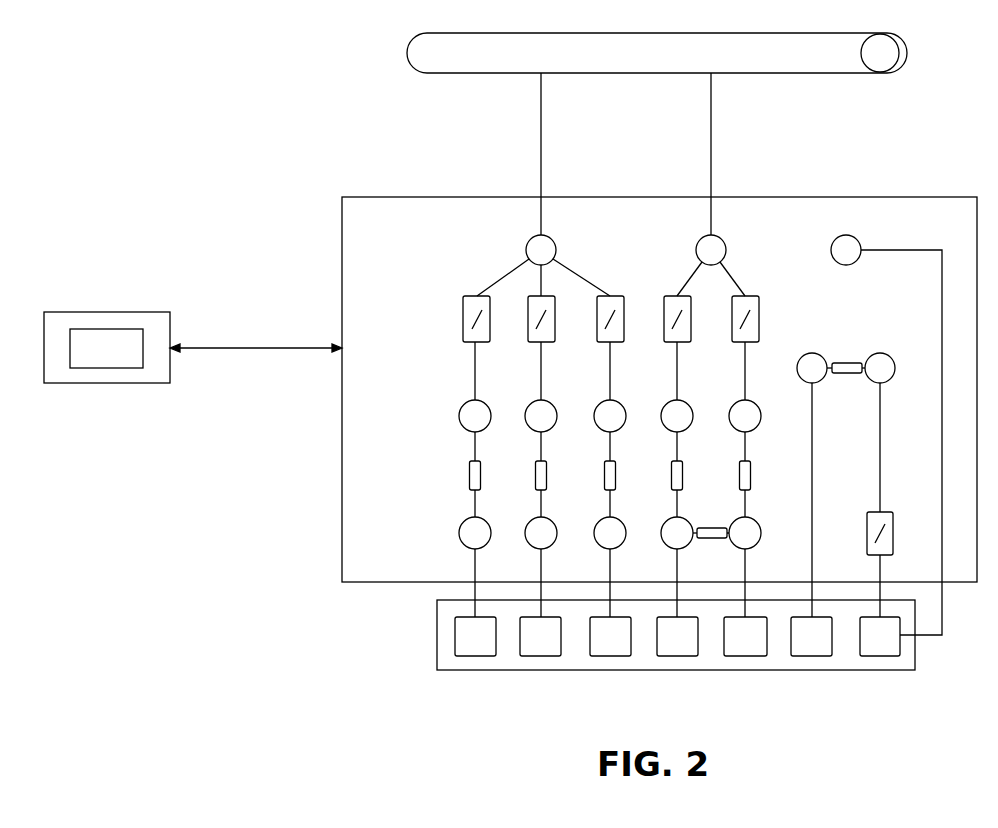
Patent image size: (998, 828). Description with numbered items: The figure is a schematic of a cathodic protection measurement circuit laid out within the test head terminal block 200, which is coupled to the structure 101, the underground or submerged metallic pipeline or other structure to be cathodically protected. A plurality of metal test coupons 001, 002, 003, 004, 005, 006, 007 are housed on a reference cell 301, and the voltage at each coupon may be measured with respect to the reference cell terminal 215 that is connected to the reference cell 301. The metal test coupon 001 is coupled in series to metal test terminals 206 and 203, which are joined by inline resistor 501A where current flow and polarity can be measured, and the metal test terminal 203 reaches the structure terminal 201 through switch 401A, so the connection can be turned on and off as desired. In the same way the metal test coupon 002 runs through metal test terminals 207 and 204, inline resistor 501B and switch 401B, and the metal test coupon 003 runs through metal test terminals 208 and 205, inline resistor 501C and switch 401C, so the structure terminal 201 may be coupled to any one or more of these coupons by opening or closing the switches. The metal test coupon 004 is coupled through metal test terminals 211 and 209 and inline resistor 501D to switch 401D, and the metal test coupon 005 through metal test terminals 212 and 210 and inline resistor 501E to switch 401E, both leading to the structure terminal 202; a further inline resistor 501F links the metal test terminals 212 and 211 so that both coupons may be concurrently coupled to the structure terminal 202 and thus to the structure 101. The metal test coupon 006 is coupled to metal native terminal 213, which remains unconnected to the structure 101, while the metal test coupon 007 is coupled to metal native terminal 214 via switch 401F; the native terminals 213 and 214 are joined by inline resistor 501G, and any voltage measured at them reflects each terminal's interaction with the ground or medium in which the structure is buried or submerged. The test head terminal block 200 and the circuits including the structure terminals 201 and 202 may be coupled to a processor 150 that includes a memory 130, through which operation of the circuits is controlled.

The structure 101 is at (657, 53).
The test head terminal block 200 is at (659, 389).
The structure terminal 201 is at (541, 250).
The structure terminal 202 is at (711, 250).
The metal test terminal 203 is at (475, 416).
The metal test terminal 204 is at (541, 416).
The metal test terminal 205 is at (610, 416).
The metal test terminal 206 is at (475, 533).
The metal test terminal 207 is at (541, 533).
The metal test terminal 208 is at (610, 533).
The metal test terminal 209 is at (677, 416).
The metal test terminal 210 is at (745, 416).
The metal test terminal 211 is at (677, 533).
The metal test terminal 212 is at (745, 533).
The metal native terminal 213 is at (812, 368).
The metal native terminal 214 is at (880, 368).
The reference cell terminal 215 is at (846, 250).
The switch 401A is at (463, 322).
The switch 401B is at (528, 336).
The switch 401C is at (597, 336).
The switch 401D is at (664, 336).
The switch 401E is at (732, 336).
The switch 401F is at (867, 528).
The inline resistor 501A is at (469, 477).
The inline resistor 501B is at (535, 477).
The inline resistor 501C is at (604, 477).
The inline resistor 501D is at (671, 477).
The inline resistor 501E is at (739, 477).
The inline resistor 501F is at (706, 540).
The inline resistor 501G is at (845, 362).
The reference cell 301 is at (676, 648).
The metal test coupon 001 is at (475, 636).
The metal test coupon 002 is at (540, 636).
The metal test coupon 003 is at (610, 636).
The metal test coupon 004 is at (677, 636).
The metal test coupon 005 is at (745, 636).
The metal test coupon 006 is at (811, 636).
The metal test coupon 007 is at (880, 636).
The processor 150 is at (107, 334).
The memory 130 is at (106, 348).